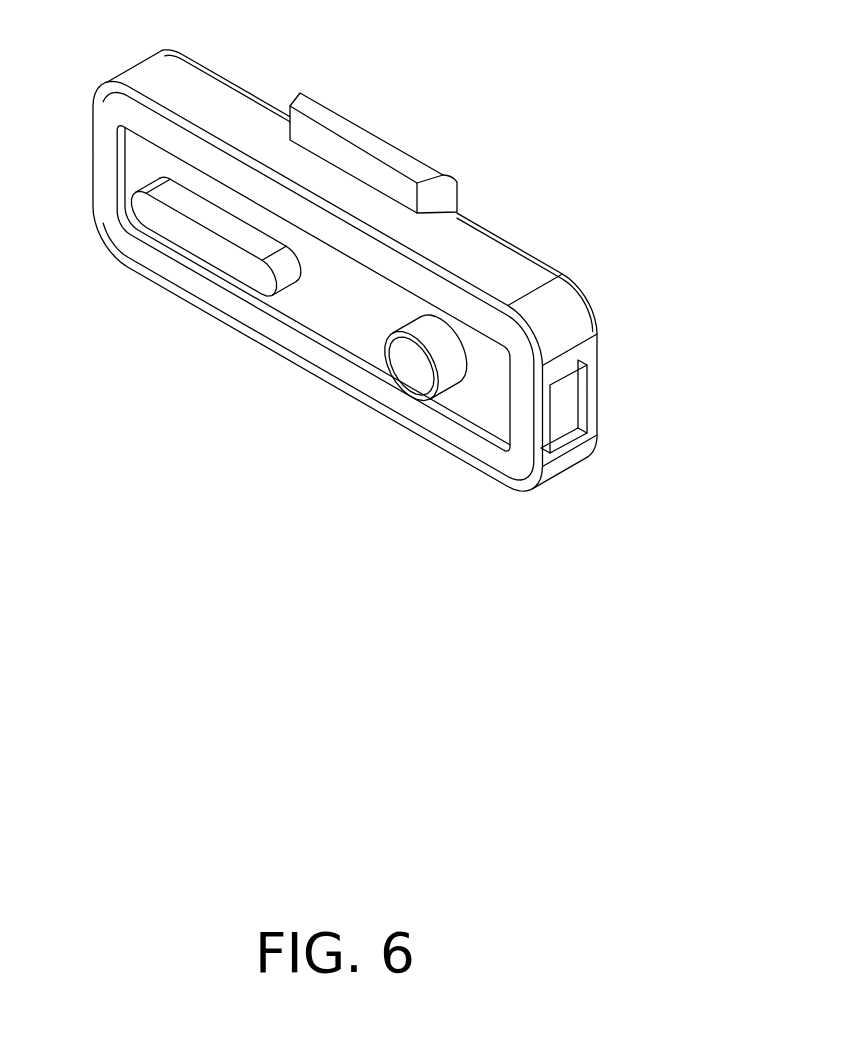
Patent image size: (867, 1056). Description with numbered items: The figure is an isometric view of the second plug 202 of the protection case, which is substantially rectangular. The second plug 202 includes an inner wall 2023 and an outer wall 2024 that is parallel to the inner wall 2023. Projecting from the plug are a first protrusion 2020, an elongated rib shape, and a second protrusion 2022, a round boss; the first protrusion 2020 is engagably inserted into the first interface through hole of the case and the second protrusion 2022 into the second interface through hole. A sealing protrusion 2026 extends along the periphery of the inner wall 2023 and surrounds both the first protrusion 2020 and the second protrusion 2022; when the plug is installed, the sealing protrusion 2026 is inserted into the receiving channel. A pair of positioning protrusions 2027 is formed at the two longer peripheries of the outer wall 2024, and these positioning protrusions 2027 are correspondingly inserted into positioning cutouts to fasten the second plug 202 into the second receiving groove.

The second plug 202 is at (434, 84).
The first protrusion 2020 is at (222, 257).
The second protrusion 2022 is at (417, 373).
The inner wall 2023 is at (360, 297).
The outer wall 2024 is at (596, 299).
The sealing protrusion 2026 is at (143, 258).
The positioning protrusions 2027 is at (385, 175).